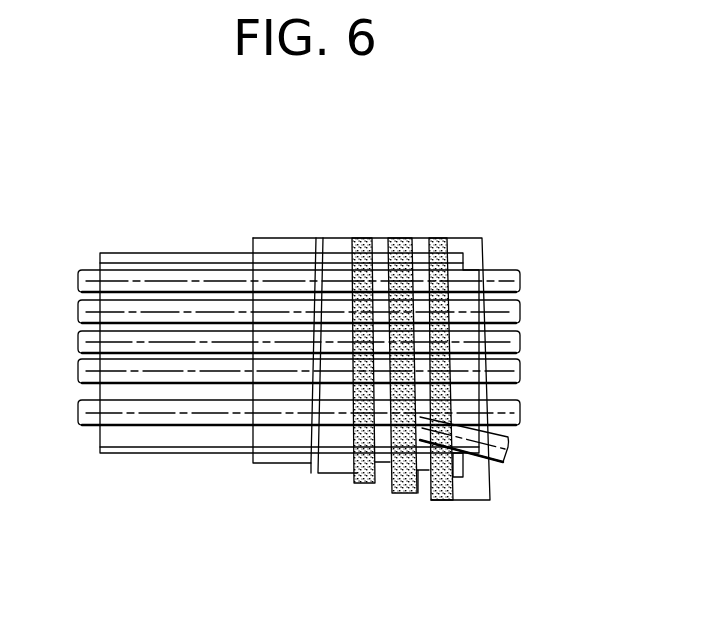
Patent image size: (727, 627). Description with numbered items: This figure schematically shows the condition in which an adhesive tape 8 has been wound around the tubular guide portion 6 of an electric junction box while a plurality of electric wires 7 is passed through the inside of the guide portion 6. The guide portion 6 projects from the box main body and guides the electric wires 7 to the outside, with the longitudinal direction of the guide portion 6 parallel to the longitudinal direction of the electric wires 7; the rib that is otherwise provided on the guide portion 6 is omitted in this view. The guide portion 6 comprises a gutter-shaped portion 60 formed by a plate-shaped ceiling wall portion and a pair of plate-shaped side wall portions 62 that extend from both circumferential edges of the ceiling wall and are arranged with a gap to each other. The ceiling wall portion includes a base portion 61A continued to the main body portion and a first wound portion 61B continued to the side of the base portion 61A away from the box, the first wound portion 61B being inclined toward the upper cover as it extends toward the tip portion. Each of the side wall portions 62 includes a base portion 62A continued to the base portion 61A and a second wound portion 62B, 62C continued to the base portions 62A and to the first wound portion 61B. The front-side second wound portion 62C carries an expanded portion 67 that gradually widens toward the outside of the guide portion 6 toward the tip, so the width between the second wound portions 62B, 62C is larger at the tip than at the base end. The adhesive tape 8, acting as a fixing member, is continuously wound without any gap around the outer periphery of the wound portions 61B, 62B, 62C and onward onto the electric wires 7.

The guide portion 6 is at (212, 158).
The gutter-shaped portion 60 is at (181, 215).
The electric wires 7 is at (167, 345).
The adhesive tape 8 is at (463, 238).
The base portion 61A is at (238, 433).
The first wound portion 61B is at (457, 455).
The side wall portions 62 is at (243, 170).
The base portions 62A is at (243, 257).
The second wound portion 62B is at (382, 258).
The second wound portion 62C is at (378, 483).
The expanded portion 67 is at (385, 480).